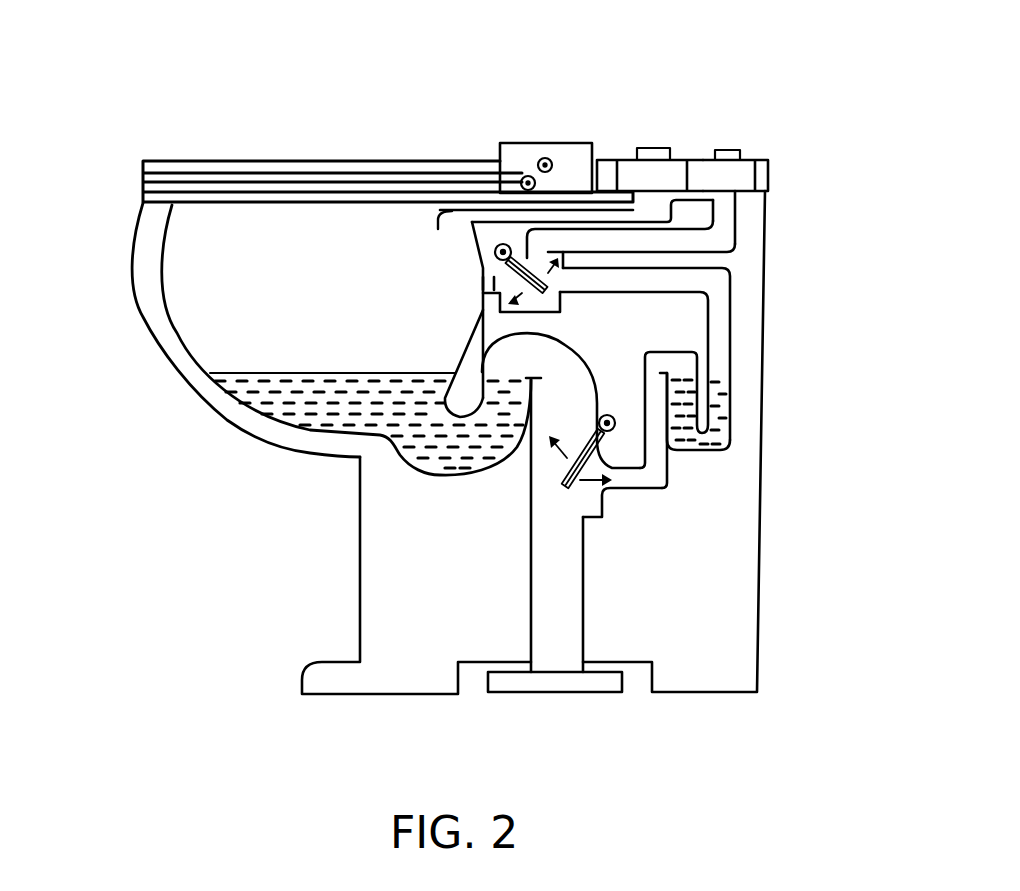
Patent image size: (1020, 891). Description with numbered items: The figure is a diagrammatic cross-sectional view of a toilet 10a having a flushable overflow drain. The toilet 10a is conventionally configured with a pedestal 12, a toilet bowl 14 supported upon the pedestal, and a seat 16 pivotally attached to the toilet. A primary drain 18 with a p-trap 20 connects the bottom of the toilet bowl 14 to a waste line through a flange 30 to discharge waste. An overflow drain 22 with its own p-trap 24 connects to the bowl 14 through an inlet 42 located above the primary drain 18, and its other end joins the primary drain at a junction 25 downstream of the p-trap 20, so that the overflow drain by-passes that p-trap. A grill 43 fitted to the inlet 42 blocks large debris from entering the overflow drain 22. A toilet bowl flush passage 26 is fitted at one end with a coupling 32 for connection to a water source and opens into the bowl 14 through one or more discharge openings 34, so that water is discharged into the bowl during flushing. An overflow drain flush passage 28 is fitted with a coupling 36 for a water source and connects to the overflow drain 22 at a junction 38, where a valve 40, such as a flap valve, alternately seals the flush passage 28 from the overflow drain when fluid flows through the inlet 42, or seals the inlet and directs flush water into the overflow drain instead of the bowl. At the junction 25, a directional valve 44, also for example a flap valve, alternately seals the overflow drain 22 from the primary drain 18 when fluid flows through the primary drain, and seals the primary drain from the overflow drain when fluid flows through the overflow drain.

The toilet with flushable overflow drain 10a is at (186, 124).
The pedestal 12 is at (358, 566).
The toilet bowl 14 is at (153, 337).
The seat 16 is at (142, 190).
The primary drain 18 is at (545, 555).
The p-trap 20 is at (466, 476).
The overflow drain 22 is at (718, 296).
The p-trap 24 is at (729, 387).
The junction 25 is at (608, 496).
The toilet bowl flush passage 26 is at (520, 218).
The overflow drain flush passage 28 is at (737, 227).
The flange 30 is at (597, 682).
The coupling 32 is at (628, 175).
The discharge openings 34 is at (452, 235).
The coupling 36 is at (742, 172).
The junction 38 is at (545, 313).
The valve 40 is at (568, 268).
The inlet 42 is at (478, 303).
The grill 43 is at (478, 293).
The directional valve 44 is at (563, 462).